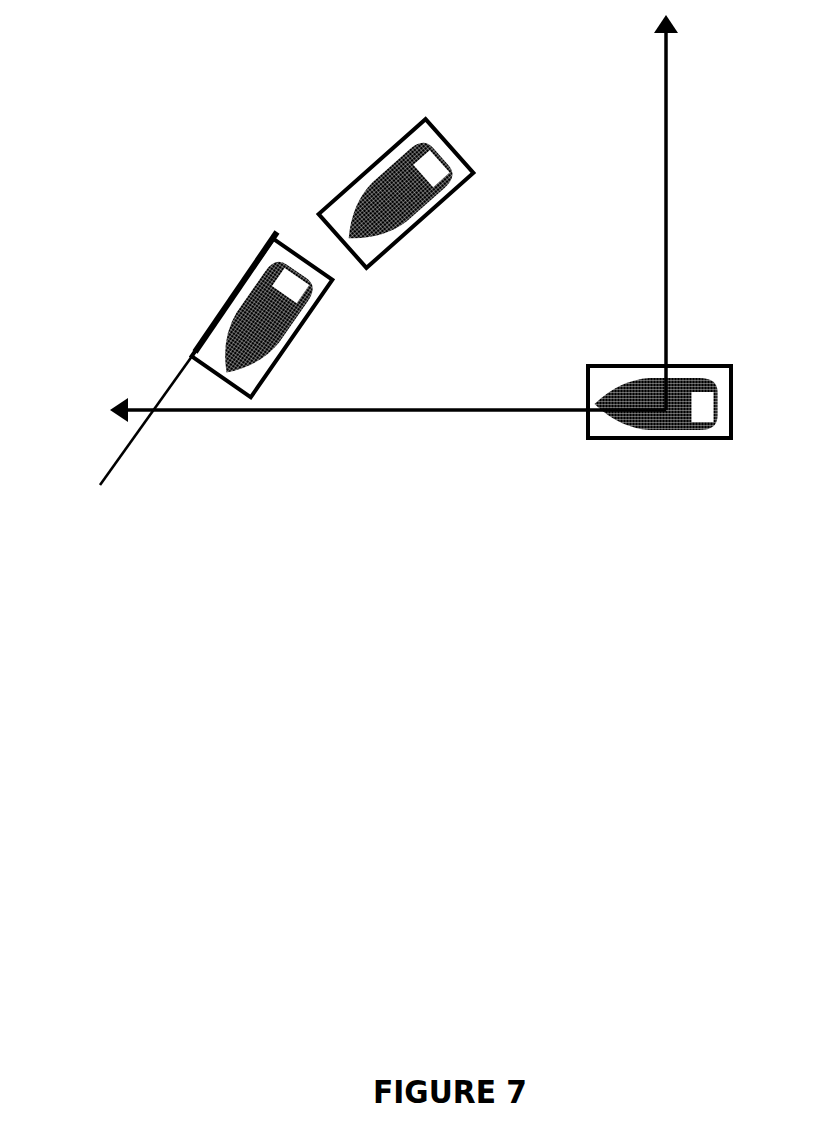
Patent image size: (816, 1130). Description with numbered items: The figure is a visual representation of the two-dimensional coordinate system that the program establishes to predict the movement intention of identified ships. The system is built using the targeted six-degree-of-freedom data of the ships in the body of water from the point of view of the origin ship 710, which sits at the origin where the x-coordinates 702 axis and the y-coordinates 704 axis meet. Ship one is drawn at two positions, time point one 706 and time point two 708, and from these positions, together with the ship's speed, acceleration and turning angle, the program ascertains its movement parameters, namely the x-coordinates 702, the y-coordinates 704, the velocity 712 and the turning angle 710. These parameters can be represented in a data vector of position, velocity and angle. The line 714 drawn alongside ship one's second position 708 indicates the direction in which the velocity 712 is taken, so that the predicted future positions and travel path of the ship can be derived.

The x-coordinates 702 is at (430, 483).
The y-coordinates 704 is at (720, 134).
The ship 1 at time point 1 706 is at (354, 152).
The ship 1 at time point 2 708 is at (300, 367).
The origin ship 710 is at (666, 468).
The velocity 712 is at (194, 394).
The vessel side aligned with heading line 714 is at (191, 349).